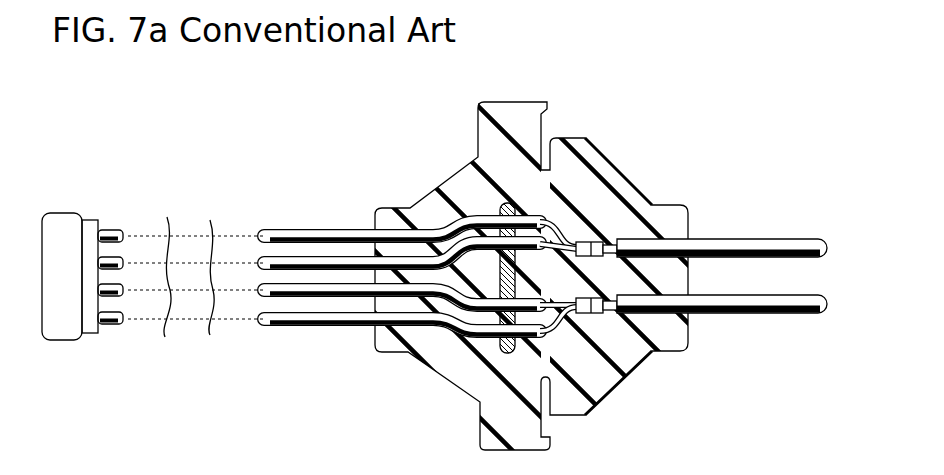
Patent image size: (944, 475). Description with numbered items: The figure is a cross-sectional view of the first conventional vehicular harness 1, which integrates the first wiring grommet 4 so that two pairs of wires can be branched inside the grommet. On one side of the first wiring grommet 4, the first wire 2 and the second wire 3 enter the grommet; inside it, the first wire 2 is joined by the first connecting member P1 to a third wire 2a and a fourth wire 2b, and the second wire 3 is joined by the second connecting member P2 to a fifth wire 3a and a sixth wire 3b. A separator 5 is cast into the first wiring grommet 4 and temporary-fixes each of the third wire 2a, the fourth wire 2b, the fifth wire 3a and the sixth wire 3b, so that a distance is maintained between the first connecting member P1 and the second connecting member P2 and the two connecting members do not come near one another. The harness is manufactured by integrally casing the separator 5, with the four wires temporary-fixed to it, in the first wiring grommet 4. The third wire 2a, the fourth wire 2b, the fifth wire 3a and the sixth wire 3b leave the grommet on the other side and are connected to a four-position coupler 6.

The first conventional vehicular harness 1 is at (513, 237).
The first wire 2 is at (765, 245).
The third wire 2a is at (297, 230).
The fourth wire 2b is at (327, 258).
The second wire 3 is at (767, 305).
The fifth wire 3a is at (280, 328).
The sixth wire 3b is at (317, 297).
The first wiring grommet 4 is at (590, 384).
The separator 5 is at (503, 202).
The 4P-coupler 6 is at (70, 226).
The first connecting member P1 is at (592, 242).
The second connecting member P2 is at (597, 314).